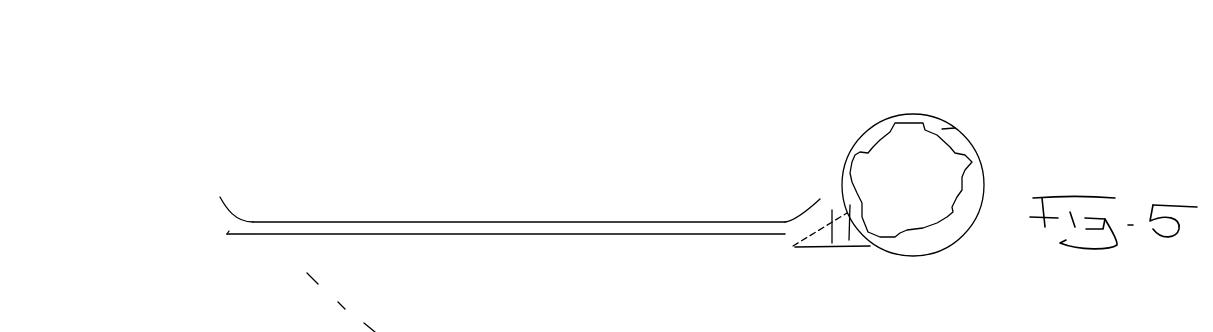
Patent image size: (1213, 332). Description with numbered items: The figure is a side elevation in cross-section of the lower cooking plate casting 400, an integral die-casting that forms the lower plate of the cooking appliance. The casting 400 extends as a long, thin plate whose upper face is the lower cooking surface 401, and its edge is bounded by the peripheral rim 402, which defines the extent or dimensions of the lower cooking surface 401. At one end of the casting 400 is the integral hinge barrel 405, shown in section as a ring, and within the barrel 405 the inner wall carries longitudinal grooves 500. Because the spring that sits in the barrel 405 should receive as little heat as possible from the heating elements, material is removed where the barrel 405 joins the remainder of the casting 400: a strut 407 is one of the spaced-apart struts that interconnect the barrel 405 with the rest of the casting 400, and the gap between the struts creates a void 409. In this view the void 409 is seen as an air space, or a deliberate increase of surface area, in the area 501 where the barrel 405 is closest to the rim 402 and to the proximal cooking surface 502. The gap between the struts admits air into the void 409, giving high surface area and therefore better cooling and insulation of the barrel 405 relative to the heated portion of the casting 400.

The lower cooking plate casting 400 is at (397, 234).
The lower cooking surface 401 is at (324, 302).
The peripheral rim 402 is at (212, 198).
The hinge barrel 405 is at (948, 131).
The strut 407 is at (830, 247).
The void 409 is at (832, 225).
The longitudinal groove 500 is at (965, 166).
The area where the barrels are closest to the rim 501 is at (834, 190).
The proximal cooking surface 502 is at (778, 220).